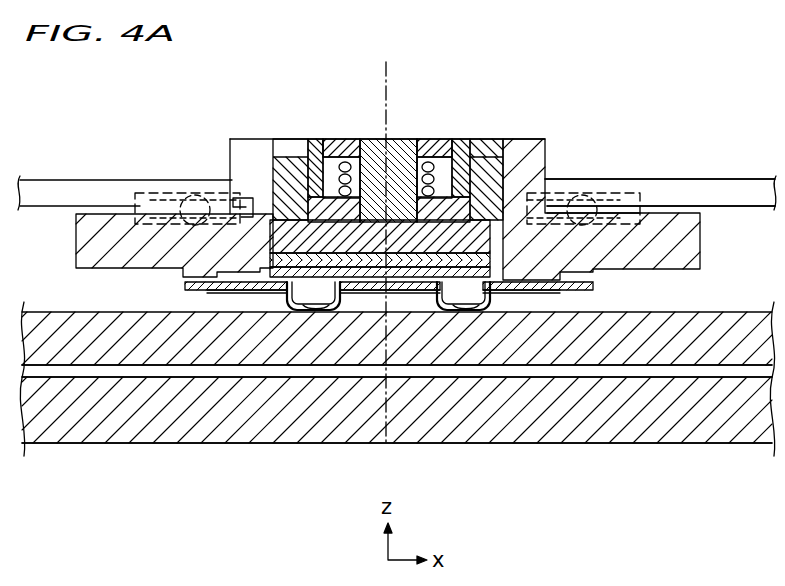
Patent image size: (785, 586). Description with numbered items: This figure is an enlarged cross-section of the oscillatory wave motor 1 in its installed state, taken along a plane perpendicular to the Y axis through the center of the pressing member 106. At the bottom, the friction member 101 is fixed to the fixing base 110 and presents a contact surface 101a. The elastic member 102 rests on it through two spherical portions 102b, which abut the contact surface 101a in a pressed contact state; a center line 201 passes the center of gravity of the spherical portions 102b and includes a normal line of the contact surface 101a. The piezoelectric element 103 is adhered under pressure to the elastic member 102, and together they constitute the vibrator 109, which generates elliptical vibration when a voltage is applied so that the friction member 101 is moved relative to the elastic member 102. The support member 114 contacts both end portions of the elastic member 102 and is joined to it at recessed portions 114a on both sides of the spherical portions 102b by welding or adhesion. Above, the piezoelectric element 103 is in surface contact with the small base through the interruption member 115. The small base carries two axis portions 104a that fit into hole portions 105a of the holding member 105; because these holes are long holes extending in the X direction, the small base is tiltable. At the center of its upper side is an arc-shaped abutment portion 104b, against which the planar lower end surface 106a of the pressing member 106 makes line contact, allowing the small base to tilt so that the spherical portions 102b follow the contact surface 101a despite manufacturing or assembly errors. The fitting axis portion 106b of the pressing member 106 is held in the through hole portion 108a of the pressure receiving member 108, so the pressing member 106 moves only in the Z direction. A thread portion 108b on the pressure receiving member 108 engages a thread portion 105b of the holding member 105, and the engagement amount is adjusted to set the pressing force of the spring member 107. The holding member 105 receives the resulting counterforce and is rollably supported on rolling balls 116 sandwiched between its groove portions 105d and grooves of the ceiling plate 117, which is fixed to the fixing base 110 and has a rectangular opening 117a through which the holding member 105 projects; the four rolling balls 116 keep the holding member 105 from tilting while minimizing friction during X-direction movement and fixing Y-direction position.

The oscillatory wave motor 1 is at (641, 55).
The friction member 101 is at (614, 357).
The contact surface 101a is at (707, 312).
The elastic member 102 is at (257, 280).
The spherical portions 102b is at (474, 292).
The piezoelectric element 103 is at (265, 268).
The axis portions 104a is at (305, 235).
The abutment portion 104b is at (490, 118).
The holding member 105 is at (540, 157).
The hole portions 105a is at (253, 137).
The thread portion 105b is at (305, 137).
The groove portions 105d is at (137, 213).
The pressing member 106 is at (395, 137).
The lower end surface 106a is at (368, 137).
The fitting axis portion 106b is at (403, 137).
The spring member 107 is at (347, 137).
The pressure receiving member 108 is at (430, 138).
The through hole portion 108a is at (427, 137).
The thread portion 108b is at (327, 137).
The vibrator 109 is at (180, 151).
The fixing base 110 is at (665, 437).
The support member 114 is at (513, 290).
The recessed portions 114a is at (234, 295).
The interruption member 115 is at (253, 197).
The rolling balls 116 is at (187, 207).
The ceiling plate 117 is at (763, 177).
The rectangular opening 117a is at (138, 204).
The center line 201 is at (386, 452).